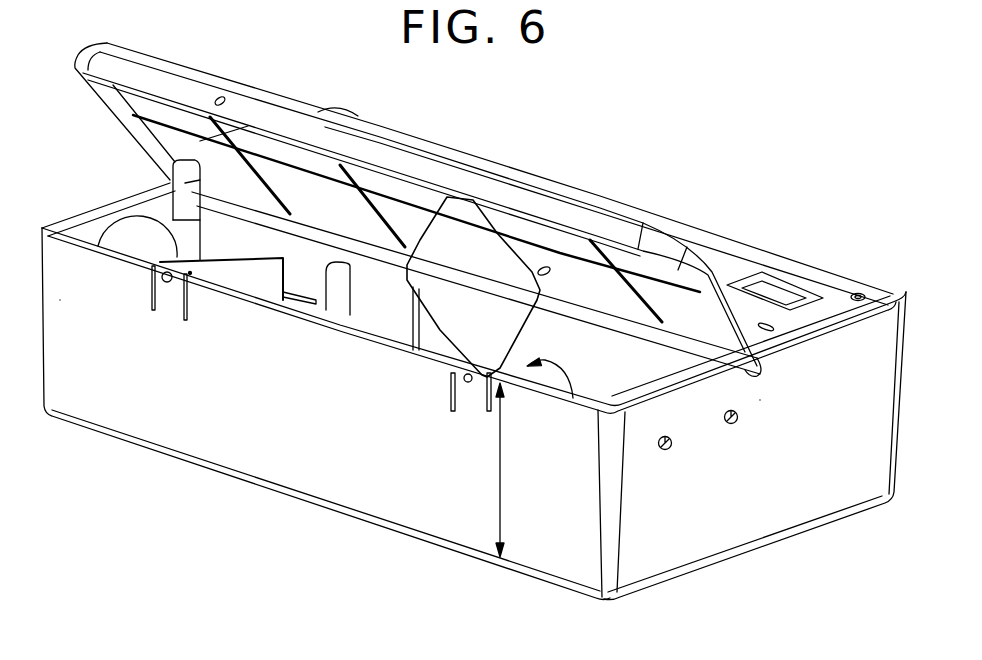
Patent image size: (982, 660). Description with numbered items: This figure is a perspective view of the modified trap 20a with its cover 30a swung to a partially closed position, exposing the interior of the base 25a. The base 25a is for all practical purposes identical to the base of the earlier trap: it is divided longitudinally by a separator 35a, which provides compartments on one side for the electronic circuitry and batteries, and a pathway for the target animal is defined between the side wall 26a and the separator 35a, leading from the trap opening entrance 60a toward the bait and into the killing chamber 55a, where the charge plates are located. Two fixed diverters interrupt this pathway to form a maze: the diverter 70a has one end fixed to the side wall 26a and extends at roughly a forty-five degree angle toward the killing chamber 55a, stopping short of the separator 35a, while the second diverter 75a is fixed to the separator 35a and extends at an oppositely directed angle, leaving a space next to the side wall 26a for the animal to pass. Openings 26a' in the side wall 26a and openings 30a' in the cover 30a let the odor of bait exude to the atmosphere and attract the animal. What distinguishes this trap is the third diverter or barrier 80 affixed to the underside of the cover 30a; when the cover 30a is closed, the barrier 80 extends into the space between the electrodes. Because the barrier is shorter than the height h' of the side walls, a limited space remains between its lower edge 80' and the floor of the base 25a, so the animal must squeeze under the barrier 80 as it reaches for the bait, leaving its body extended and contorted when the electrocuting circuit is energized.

The trap 20a is at (232, 506).
The base 25a is at (430, 492).
The side wall 26a is at (103, 352).
The openings in the side wall 26a' is at (698, 468).
The cover 30a is at (484, 209).
The openings in the cover 30a' is at (547, 199).
The separator 35a is at (640, 380).
The killing chamber 55a is at (573, 398).
The trap opening entrance 60a is at (133, 240).
The diverter 70a is at (242, 277).
The second diverter 75a is at (352, 322).
The third diverter or barrier 80 is at (473, 287).
The lower edge of the barrier 80' is at (435, 384).
The height of the side walls h' is at (499, 470).